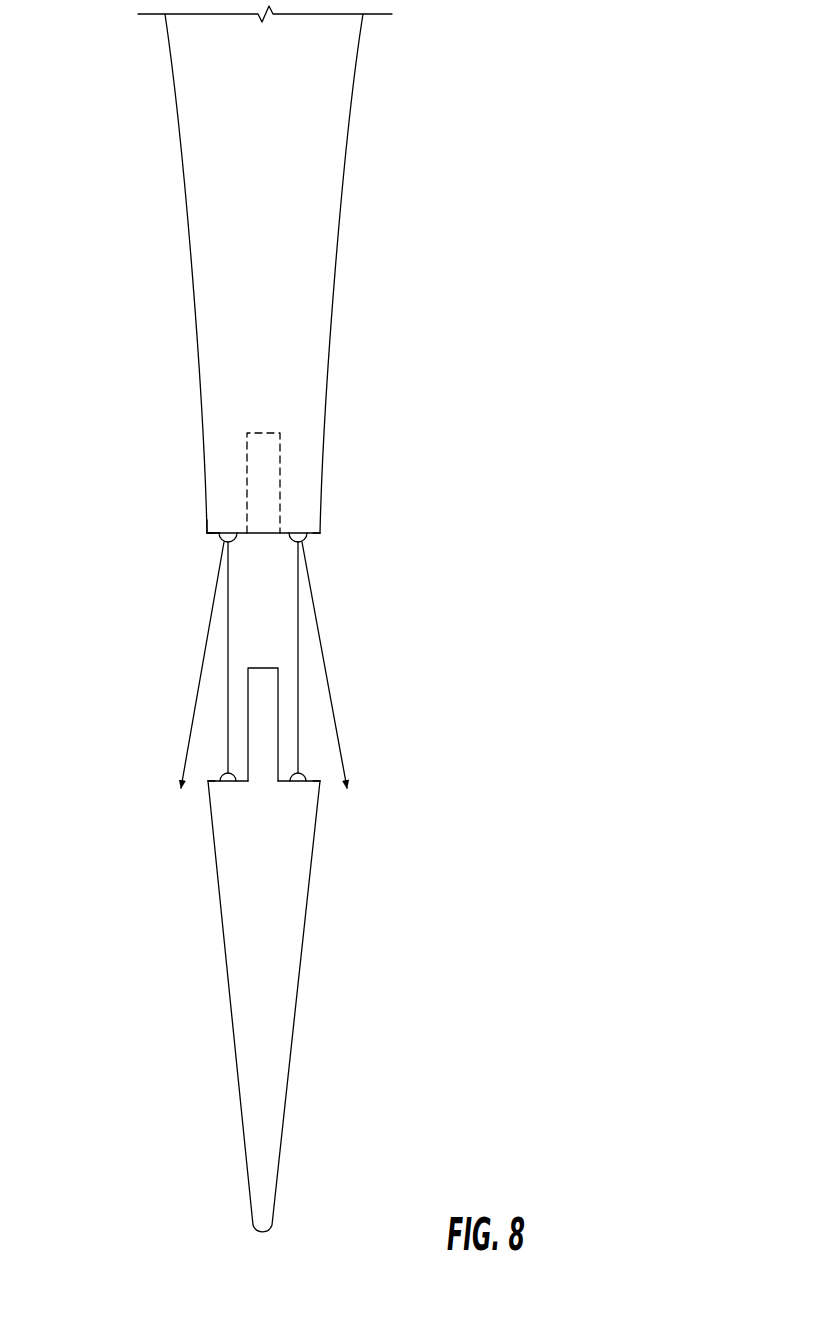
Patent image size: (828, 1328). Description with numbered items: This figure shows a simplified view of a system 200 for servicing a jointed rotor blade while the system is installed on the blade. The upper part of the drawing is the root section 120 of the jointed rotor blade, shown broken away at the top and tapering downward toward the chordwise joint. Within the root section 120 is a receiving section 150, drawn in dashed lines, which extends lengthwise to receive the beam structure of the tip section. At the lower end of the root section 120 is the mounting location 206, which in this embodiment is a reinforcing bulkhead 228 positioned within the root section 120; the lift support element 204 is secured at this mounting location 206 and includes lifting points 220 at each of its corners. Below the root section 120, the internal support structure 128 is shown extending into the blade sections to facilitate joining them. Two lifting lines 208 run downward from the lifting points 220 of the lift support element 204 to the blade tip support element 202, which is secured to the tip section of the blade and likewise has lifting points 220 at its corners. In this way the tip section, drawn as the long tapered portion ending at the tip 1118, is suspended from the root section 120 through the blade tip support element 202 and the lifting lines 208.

The system for servicing the jointed rotor blade 200 is at (588, 140).
The root section 120 is at (322, 110).
The receiving section 150 is at (270, 452).
The reinforcing bulkhead 228 is at (226, 529).
The lifting point 220 is at (206, 533).
The lift support element 204 is at (218, 542).
The mounting location 206 is at (308, 542).
The lifting line 208 is at (295, 637).
The internal support structure 128 is at (267, 710).
The blade tip support element 202 is at (298, 784).
The tip 1118 is at (273, 1218).